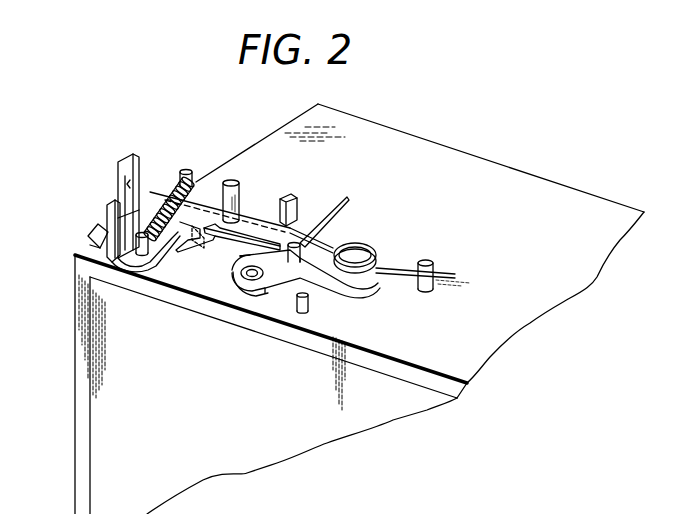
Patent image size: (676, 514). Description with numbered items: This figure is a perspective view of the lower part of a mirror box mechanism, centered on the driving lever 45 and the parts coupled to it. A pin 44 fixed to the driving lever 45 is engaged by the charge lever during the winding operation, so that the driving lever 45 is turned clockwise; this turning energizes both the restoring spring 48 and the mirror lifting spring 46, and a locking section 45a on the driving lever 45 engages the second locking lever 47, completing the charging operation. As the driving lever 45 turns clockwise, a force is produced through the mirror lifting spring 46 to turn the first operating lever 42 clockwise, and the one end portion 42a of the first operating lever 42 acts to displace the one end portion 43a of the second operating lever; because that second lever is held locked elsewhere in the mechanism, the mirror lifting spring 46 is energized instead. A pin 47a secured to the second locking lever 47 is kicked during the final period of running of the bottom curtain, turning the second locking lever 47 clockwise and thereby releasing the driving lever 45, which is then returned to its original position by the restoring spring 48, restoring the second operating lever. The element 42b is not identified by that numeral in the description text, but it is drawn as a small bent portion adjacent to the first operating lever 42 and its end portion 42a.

The first operating lever 42 is at (128, 247).
The one end portion of the first operating lever 42a is at (100, 210).
The bent tab 42b is at (100, 227).
The one end portion of the second operating lever 43a is at (128, 162).
The pin 44 is at (233, 205).
The driving lever 45 is at (160, 177).
The locking section 45a is at (293, 205).
The mirror lifting spring 46 is at (162, 238).
The second locking lever 47 is at (348, 203).
The pin 47a is at (268, 288).
The restoring spring 48 is at (400, 275).